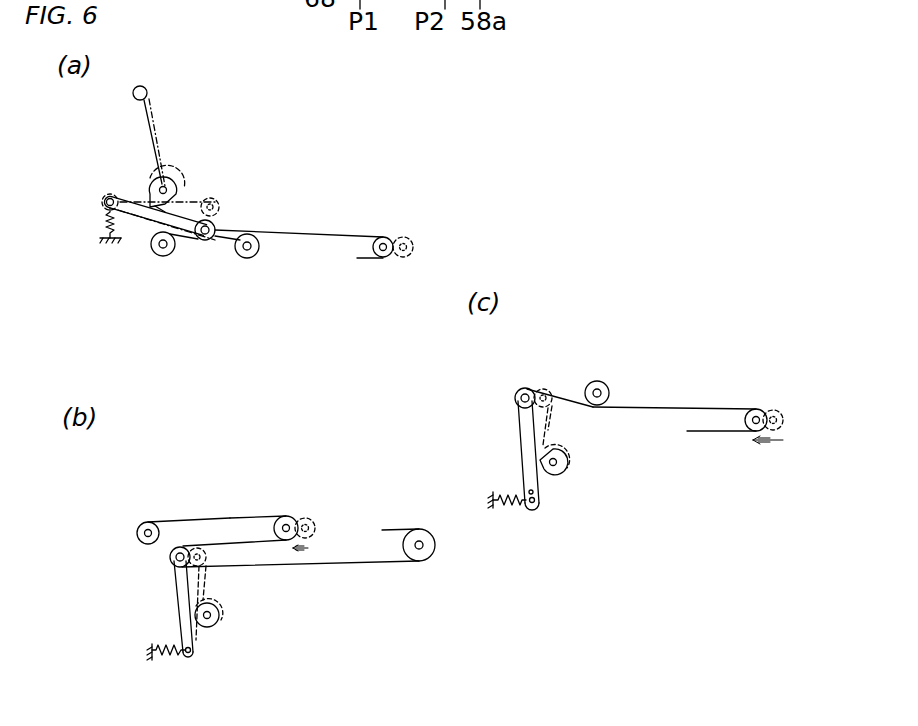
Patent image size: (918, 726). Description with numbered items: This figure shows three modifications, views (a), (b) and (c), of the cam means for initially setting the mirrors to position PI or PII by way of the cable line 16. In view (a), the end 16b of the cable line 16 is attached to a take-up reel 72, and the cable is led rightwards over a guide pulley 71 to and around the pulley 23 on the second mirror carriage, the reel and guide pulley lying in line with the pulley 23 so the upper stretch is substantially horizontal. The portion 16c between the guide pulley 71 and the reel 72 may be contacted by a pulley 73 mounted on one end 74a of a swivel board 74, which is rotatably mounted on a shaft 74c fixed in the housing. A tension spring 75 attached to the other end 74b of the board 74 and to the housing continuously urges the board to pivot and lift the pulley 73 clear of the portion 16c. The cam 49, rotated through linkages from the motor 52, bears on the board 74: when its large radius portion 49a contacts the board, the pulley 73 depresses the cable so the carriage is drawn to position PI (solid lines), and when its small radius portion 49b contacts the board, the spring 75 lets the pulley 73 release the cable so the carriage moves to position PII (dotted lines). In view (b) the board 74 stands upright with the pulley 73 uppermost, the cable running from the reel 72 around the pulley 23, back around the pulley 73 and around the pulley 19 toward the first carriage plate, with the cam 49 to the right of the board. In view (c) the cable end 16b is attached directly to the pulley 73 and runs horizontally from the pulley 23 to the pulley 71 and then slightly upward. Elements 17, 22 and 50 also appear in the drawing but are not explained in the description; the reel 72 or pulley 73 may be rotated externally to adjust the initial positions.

The cable line 16 is at (305, 233).
The end of cable line 16b is at (184, 242).
The portion of cable line 16c is at (221, 241).
The pulley 17 is at (419, 561).
The pulley 19 is at (418, 530).
The pulley (alternate position) 22 is at (388, 256).
The pulley 23 is at (385, 237).
The cam 49 is at (178, 201).
The large radius portion 49a is at (166, 212).
The small radius portion 49b is at (178, 176).
The cam shaft 50 is at (163, 186).
The motor 52 is at (142, 86).
The guide pulley 71 is at (256, 254).
The take-up reel 72 is at (161, 256).
The pulley 73 is at (214, 227).
The swivel board 74 is at (162, 225).
The end of swivel board 74a is at (192, 226).
The other end of swivel board 74b is at (106, 198).
The shaft 74c is at (122, 200).
The tension spring 75 is at (107, 222).